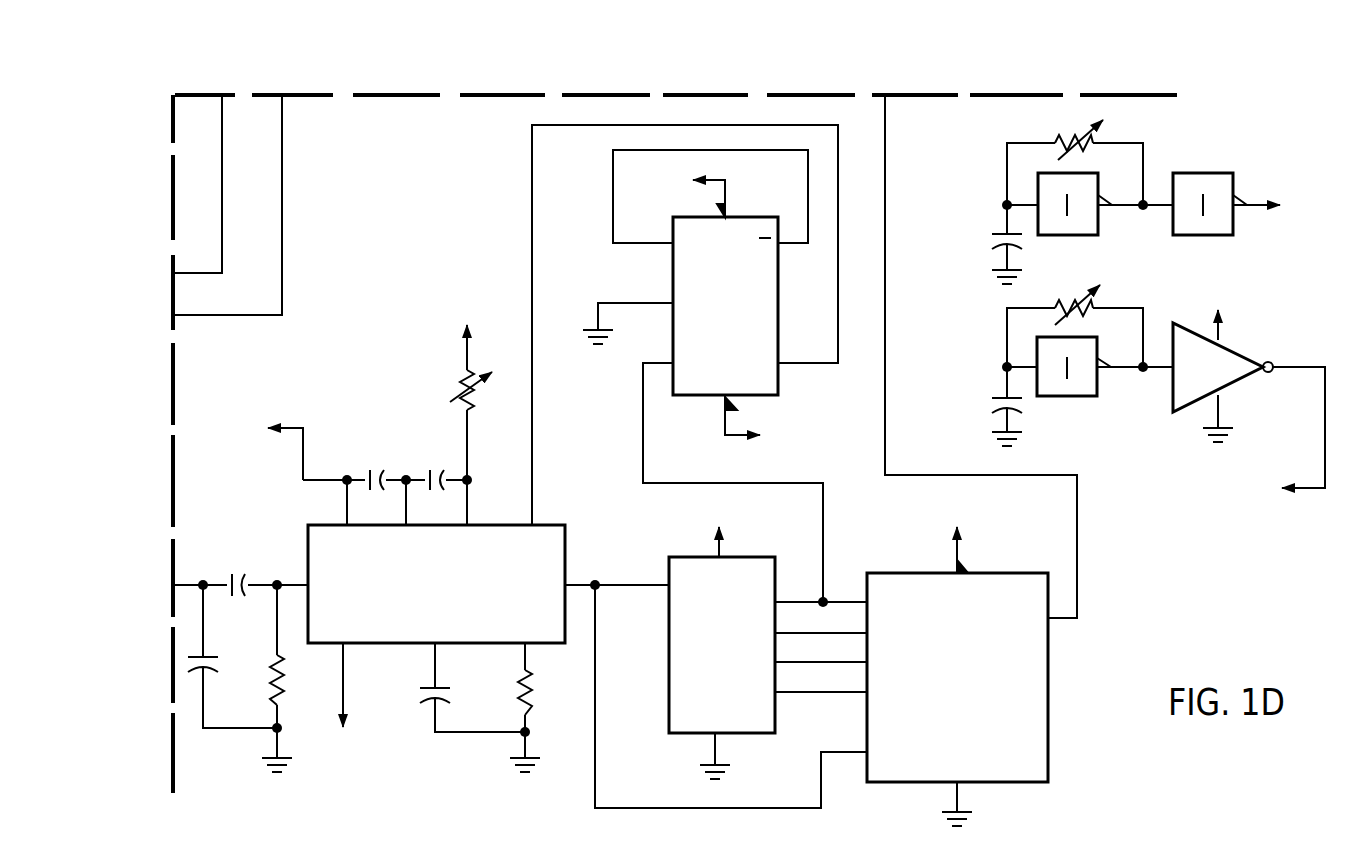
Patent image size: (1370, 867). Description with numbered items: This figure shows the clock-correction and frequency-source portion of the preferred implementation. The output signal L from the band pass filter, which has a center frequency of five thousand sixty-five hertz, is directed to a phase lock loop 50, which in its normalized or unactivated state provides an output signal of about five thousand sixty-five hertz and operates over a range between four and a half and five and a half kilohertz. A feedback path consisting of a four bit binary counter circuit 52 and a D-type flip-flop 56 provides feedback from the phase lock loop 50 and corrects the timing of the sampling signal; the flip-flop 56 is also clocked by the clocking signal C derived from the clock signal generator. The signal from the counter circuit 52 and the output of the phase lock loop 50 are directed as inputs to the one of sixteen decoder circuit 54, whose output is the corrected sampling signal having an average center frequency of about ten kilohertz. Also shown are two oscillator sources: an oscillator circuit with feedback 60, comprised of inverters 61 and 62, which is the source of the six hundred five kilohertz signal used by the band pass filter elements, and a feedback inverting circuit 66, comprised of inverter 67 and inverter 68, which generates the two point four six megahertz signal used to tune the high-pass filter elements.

The phase lock loop 50 is at (313, 520).
The 4 bit binary counter circuit 52 is at (750, 570).
The 1 of 16 decoder circuit 54 is at (917, 585).
The D-type flip-flop 56 is at (683, 280).
The oscillator circuit with feedback 60 is at (1139, 202).
The inverter 61 is at (1083, 217).
The inverter 62 is at (1190, 185).
The feedback inverting circuit 66 is at (1122, 390).
The inverter 67 is at (1075, 385).
The inverter 68 is at (1233, 360).
The clocking signal C is at (222, 212).
The output signal from the band pass filter L is at (297, 583).